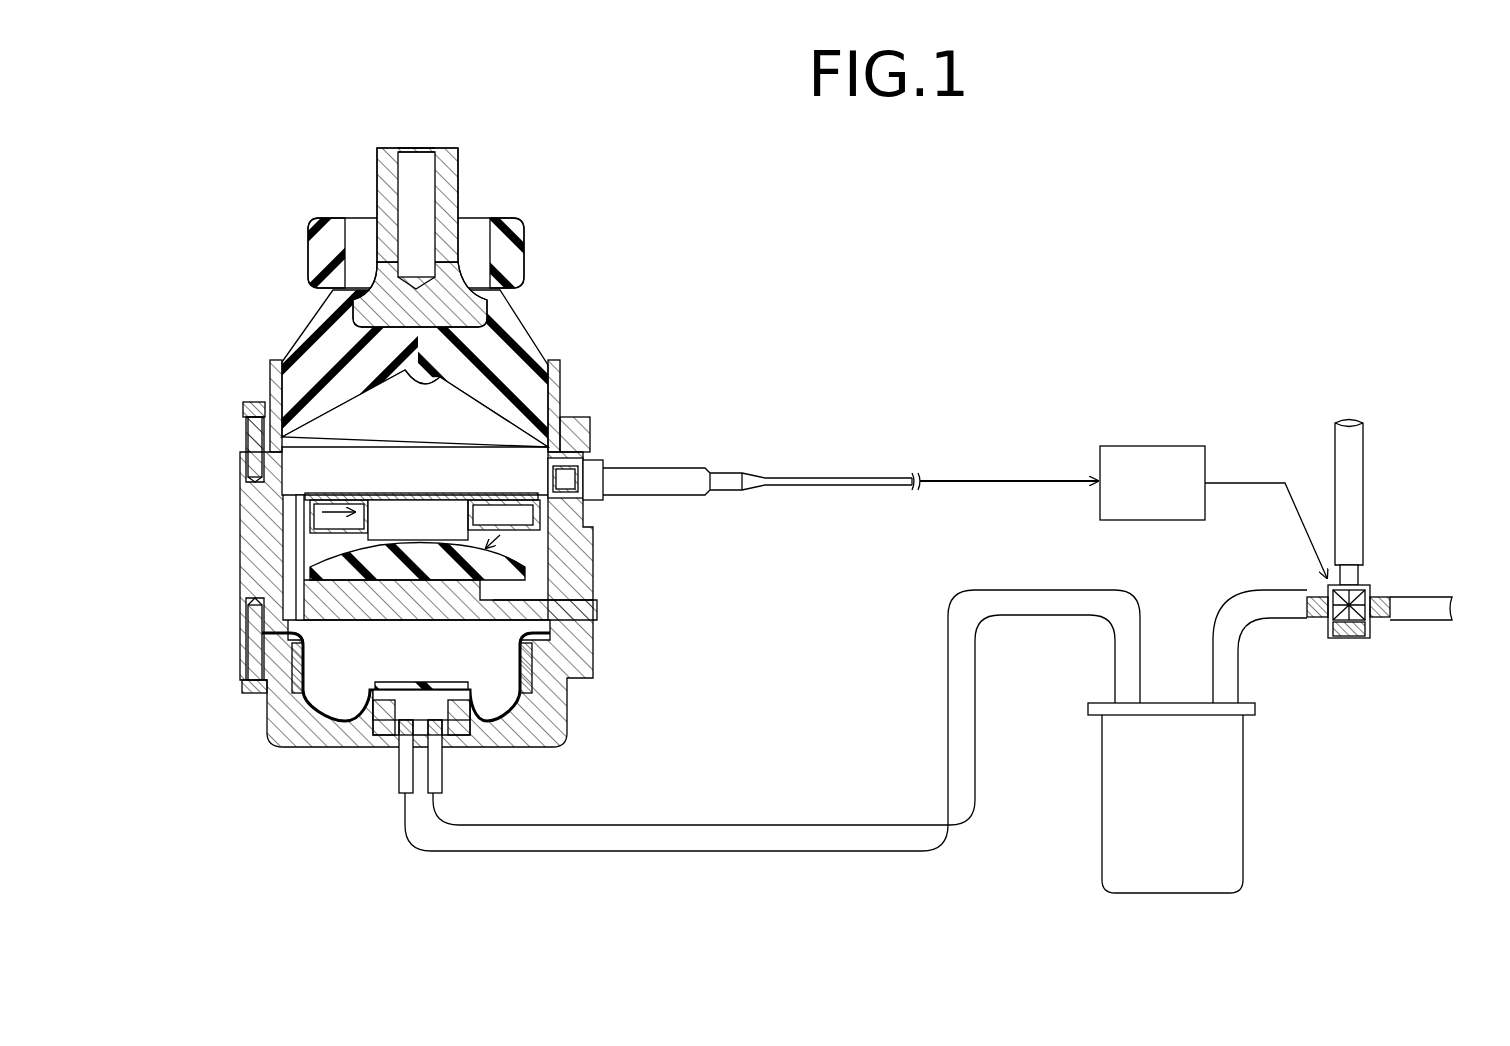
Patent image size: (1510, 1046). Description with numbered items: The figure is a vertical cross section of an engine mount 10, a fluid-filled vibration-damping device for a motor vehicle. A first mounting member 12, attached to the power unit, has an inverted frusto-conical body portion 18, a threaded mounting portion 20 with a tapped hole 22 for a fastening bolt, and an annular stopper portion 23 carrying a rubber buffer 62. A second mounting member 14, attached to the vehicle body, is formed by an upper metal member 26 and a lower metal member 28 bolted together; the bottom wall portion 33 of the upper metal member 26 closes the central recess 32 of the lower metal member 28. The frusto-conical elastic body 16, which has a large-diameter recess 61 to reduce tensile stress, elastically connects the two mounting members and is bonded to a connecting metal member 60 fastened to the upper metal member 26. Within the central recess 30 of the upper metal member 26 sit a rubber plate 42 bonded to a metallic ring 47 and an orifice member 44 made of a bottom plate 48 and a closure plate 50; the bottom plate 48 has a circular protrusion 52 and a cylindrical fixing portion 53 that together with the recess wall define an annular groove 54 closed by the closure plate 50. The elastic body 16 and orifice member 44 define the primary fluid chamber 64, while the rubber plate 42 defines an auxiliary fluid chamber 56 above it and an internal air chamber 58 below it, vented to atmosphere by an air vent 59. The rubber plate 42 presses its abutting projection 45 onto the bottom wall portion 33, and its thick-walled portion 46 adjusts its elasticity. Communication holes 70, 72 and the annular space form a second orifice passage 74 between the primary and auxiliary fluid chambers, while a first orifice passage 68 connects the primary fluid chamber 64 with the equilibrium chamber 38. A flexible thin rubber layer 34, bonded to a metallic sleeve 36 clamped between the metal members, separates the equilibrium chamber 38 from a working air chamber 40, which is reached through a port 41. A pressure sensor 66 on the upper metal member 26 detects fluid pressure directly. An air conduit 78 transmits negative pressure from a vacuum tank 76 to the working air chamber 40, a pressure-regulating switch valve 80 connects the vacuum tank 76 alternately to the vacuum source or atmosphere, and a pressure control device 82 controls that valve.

The engine mount 10 is at (578, 220).
The first mounting member 12 is at (475, 193).
The second mounting member 14 is at (236, 573).
The elastic body 16 is at (520, 350).
The body portion 18 is at (373, 293).
The threaded mounting portion 20 is at (390, 165).
The tapped hole 22 is at (413, 185).
The stopper portion 23 is at (493, 277).
The upper metal member 26 is at (585, 565).
The lower metal member 28 is at (555, 718).
The central recess 30 is at (530, 558).
The central recess 32 is at (500, 728).
The bottom wall portion 33 is at (393, 612).
The flexible thin rubber layer 34 is at (360, 702).
The metallic sleeve 36 is at (295, 682).
The equilibrium chamber 38 is at (340, 717).
The working air chamber 40 is at (403, 738).
The port 41 is at (437, 722).
The rubber plate 42 is at (545, 510).
The orifice member 44 is at (340, 546).
The abutting projection 45 is at (390, 604).
The thick-walled portion 46 is at (500, 597).
The metallic ring 47 is at (296, 580).
The bottom plate 48 is at (560, 485).
The closure plate 50 is at (462, 470).
The circular protrusion 52 is at (276, 395).
The fixing portion 53 is at (300, 565).
The annular groove 54 is at (355, 503).
The auxiliary fluid chamber 56 is at (405, 520).
The internal air chamber 58 is at (430, 612).
The air vent 59 is at (488, 725).
The connecting metal member 60 is at (575, 433).
The large-diameter recess 61 is at (507, 350).
The rubber buffer 62 is at (520, 235).
The primary fluid chamber 64 is at (387, 397).
The pressure sensor 66 is at (690, 470).
The first orifice passage 68 is at (262, 606).
The communication hole 70 is at (256, 456).
The communication hole 72 is at (412, 514).
The second orifice passage 74 is at (498, 515).
The vacuum tank 76 is at (1105, 790).
The air conduit 78 is at (820, 850).
The pressure-regulating switch valve 80 is at (1348, 640).
The pressure control device 82 is at (1152, 450).